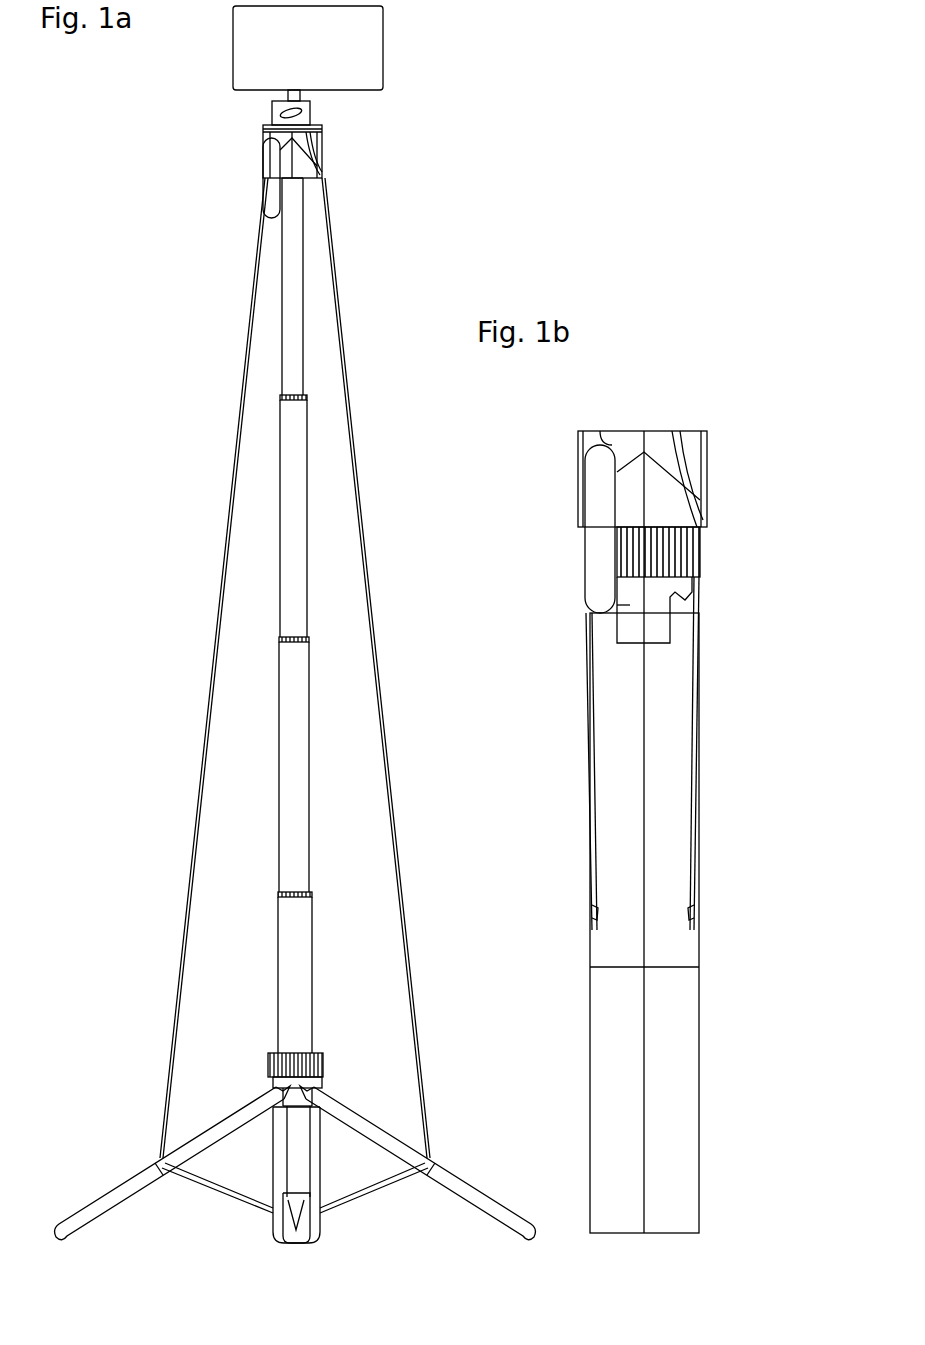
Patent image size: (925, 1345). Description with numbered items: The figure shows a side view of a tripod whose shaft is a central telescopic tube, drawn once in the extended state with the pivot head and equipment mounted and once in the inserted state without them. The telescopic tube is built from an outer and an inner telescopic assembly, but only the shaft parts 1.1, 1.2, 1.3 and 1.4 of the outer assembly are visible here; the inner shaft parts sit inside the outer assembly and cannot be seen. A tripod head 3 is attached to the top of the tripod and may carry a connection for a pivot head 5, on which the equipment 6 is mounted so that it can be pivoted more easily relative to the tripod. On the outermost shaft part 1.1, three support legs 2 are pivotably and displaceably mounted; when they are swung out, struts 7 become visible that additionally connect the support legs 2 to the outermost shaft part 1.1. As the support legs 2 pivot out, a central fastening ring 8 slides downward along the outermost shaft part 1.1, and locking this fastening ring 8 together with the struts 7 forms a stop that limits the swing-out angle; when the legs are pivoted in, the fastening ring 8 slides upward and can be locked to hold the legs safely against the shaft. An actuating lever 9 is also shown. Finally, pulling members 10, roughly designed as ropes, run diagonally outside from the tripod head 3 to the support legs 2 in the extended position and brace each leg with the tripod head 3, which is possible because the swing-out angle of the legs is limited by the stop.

In FIG. 1a, the outermost shaft part 1.1 is at (290, 967).
In FIG. 1a, the shaft part 1.2 is at (290, 735).
In FIG. 1a, the shaft part 1.3 is at (300, 436).
In FIG. 1a, the shaft part 1.4 is at (296, 243).
In FIG. 1a, the support legs 2 is at (125, 1180).
In FIG. 1b, the support legs 2 is at (600, 1095).
In FIG. 1a, the tripod head 3 is at (322, 158).
In FIG. 1b, the tripod head 3 is at (708, 468).
In FIG. 1a, the pivot head 5 is at (312, 114).
In FIG. 1a, the equipment 6 is at (232, 38).
In FIG. 1a, the struts 7 is at (242, 1190).
In FIG. 1a, the central fastening ring 8 is at (266, 1060).
In FIG. 1b, the central fastening ring 8 is at (702, 553).
In FIG. 1a, the actuating lever 9 is at (266, 200).
In FIG. 1b, the actuating lever 9 is at (591, 560).
In FIG. 1a, the pulling members 10 is at (192, 864).
In FIG. 1b, the pulling members 10 is at (588, 800).